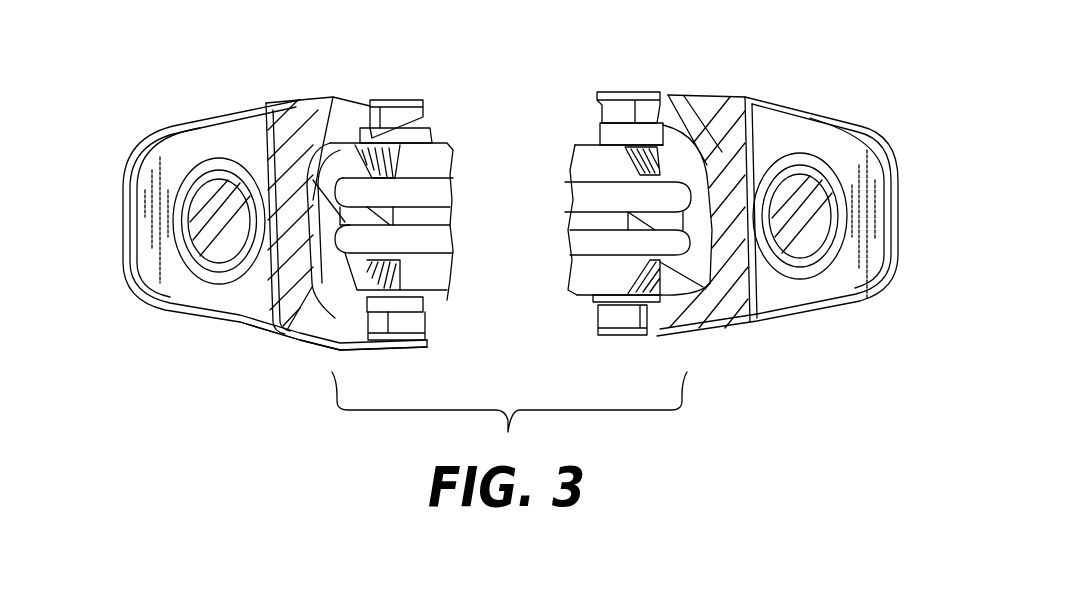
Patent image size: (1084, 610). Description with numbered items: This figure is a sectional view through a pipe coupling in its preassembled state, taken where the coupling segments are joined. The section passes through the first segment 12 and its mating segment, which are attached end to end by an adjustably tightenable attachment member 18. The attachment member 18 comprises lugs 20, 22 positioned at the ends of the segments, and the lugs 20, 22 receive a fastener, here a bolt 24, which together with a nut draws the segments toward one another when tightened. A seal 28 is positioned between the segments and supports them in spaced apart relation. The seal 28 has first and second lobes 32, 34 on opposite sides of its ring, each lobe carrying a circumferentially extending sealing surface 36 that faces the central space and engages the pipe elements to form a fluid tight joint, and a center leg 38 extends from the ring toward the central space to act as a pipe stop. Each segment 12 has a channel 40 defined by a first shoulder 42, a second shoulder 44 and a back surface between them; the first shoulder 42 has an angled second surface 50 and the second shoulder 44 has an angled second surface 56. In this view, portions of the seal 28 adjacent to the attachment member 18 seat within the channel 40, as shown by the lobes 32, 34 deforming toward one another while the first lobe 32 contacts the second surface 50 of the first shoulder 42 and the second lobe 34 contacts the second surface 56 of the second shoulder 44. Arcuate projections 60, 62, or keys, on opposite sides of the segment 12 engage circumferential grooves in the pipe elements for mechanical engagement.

The first segment 12 is at (722, 338).
The adjustably tightenable attachment member 18 is at (137, 130).
The lug 20 is at (138, 297).
The lug 22 is at (795, 315).
The bolt 24 is at (813, 197).
The seal 28 is at (757, 122).
The first lobe 32 is at (337, 320).
The second lobe 34 is at (420, 128).
The sealing surface 36 is at (391, 221).
The center leg 38 is at (603, 245).
The channel 40 is at (272, 168).
The first shoulder 42 is at (420, 305).
The second shoulder 44 is at (337, 103).
The second surface 50 is at (283, 336).
The second surface 56 is at (328, 158).
The arcuate projection 60 is at (613, 317).
The arcuate projection 62 is at (627, 120).